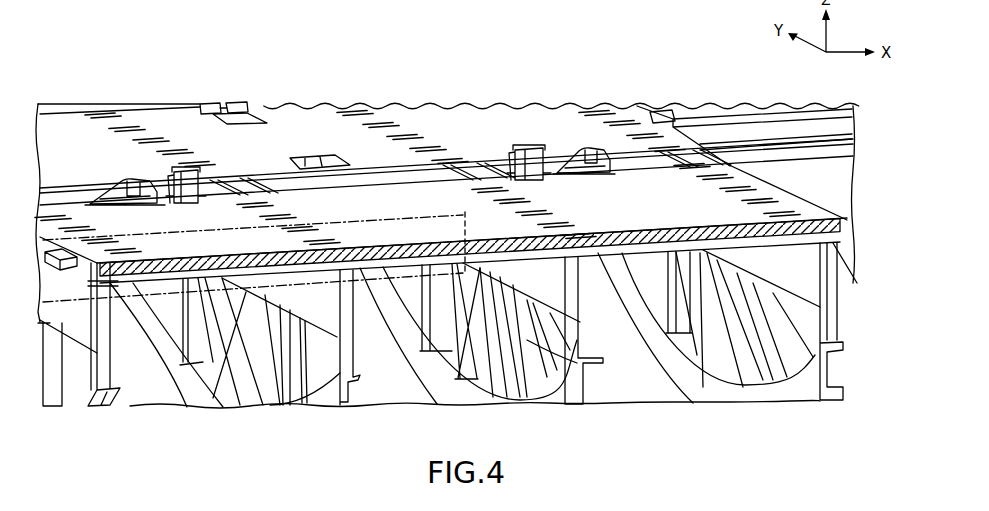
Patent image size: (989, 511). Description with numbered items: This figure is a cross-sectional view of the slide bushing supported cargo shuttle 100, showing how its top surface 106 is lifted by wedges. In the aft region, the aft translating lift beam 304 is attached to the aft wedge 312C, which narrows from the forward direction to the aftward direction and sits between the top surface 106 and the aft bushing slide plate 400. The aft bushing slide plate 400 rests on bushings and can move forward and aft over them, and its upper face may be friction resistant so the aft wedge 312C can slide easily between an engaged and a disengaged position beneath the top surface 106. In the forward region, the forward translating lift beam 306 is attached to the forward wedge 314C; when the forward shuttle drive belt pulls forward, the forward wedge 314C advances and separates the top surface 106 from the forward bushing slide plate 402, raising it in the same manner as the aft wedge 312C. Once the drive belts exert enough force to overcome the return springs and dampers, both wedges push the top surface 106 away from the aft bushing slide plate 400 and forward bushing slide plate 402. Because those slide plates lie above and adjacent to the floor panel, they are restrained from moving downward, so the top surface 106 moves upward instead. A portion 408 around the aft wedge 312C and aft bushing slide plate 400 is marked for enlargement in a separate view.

The slide bushing supported cargo shuttle 100 is at (50, 232).
The top surface 106 is at (661, 218).
The aft translating lift beam 304 is at (425, 252).
The forward translating lift beam 306 is at (503, 248).
The aft wedge 312C is at (268, 258).
The forward wedge 314C is at (618, 247).
The aft bushing slide plate 400 is at (182, 262).
The forward bushing slide plate 402 is at (694, 247).
The portion 408 is at (62, 302).